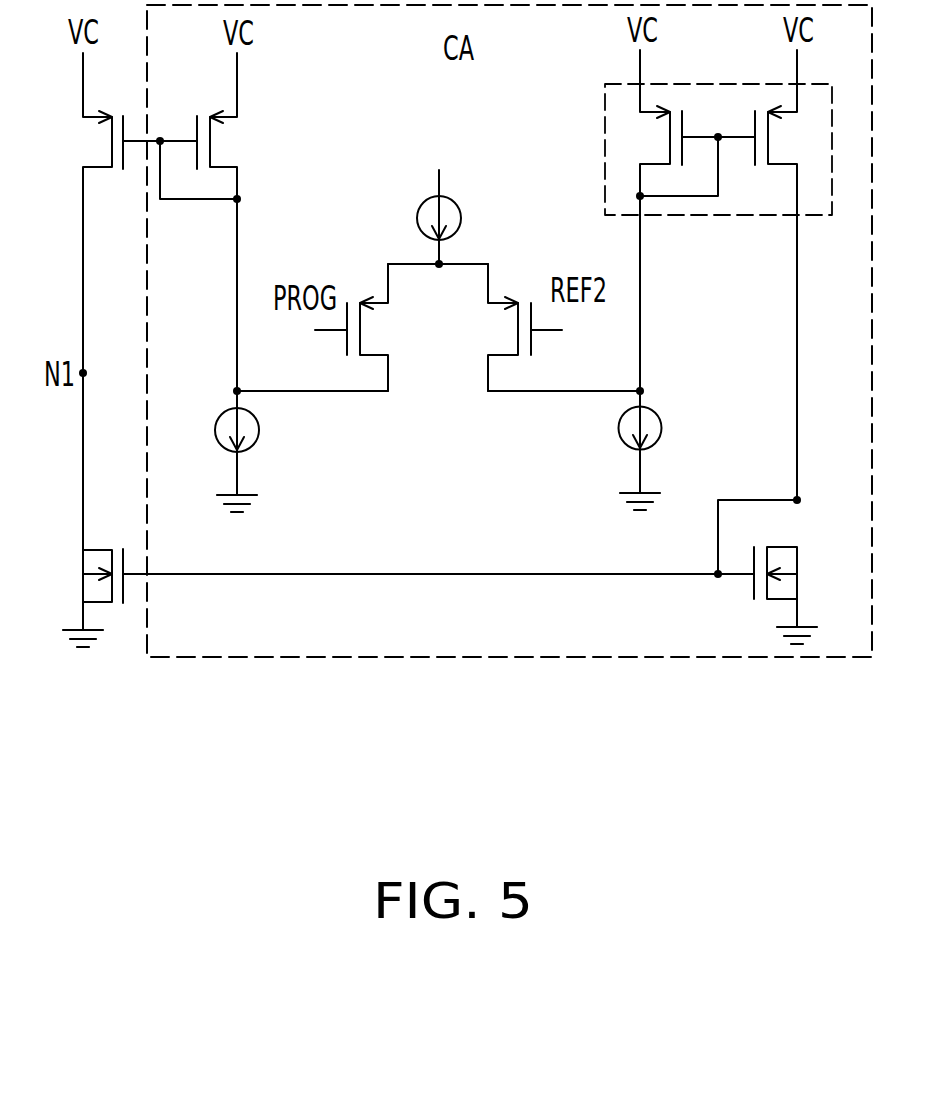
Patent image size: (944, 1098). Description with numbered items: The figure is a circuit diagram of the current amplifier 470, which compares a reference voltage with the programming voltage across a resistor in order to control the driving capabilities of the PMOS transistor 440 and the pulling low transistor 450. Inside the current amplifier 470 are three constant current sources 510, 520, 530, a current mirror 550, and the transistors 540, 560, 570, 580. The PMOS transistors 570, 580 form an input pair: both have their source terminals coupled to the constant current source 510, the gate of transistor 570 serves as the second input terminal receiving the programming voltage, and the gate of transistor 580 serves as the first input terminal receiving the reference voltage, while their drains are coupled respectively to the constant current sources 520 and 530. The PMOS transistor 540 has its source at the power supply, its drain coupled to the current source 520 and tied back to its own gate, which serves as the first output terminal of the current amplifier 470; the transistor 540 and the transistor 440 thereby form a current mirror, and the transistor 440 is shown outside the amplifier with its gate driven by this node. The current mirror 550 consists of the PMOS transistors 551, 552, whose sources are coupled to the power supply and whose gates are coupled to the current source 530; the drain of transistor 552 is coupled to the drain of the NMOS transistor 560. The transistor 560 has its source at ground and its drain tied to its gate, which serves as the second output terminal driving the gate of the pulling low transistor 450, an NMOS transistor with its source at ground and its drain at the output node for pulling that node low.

The PMOS transistor 440 is at (96, 301).
The pulling low transistor 450 is at (374, 598).
The current amplifier 470 is at (364, 658).
The constant current source 510 is at (457, 201).
The constant current source 520 is at (259, 432).
The constant current source 530 is at (661, 428).
The transistor 540 is at (223, 222).
The current mirror 550 is at (718, 275).
The transistor 551 is at (669, 125).
The transistor 552 is at (706, 280).
The transistor 560 is at (782, 570).
The transistor 570 is at (365, 327).
The transistor 580 is at (514, 327).